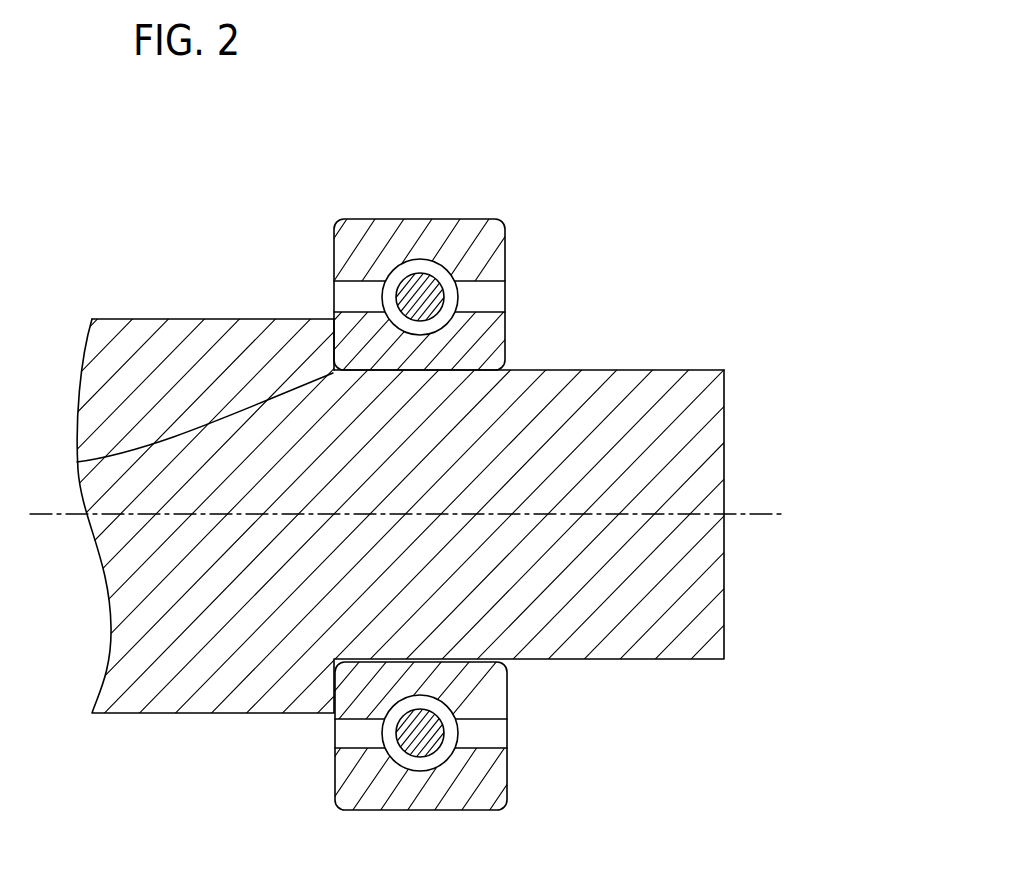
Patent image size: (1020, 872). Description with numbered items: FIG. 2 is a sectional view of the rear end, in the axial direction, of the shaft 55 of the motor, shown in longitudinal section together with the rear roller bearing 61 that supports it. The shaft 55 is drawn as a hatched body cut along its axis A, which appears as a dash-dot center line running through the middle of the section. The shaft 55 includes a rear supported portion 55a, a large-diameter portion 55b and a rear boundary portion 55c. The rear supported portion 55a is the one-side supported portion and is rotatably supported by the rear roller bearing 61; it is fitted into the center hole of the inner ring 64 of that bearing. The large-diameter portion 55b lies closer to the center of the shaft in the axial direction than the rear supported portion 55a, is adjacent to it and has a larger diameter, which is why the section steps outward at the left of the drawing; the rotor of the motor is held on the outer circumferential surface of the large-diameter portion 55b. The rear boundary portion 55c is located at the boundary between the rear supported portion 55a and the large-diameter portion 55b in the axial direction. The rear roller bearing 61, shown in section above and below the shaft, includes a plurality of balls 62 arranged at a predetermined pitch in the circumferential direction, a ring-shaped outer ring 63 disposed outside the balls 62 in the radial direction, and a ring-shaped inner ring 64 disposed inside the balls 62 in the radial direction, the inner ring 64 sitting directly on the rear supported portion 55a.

The shaft 55 is at (757, 352).
The rear supported portion 55a is at (632, 370).
The large-diameter portion 55b is at (178, 319).
The rear boundary portion 55c is at (77, 462).
The rear roller bearing 61 is at (467, 212).
The balls 62 is at (443, 728).
The outer ring 63 is at (507, 780).
The inner ring 64 is at (507, 692).
The axis (center line) A is at (757, 513).